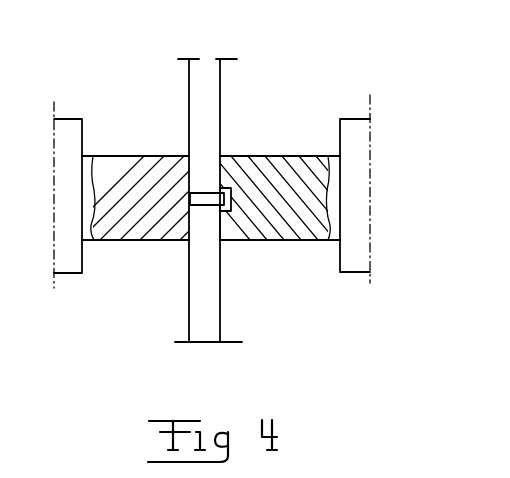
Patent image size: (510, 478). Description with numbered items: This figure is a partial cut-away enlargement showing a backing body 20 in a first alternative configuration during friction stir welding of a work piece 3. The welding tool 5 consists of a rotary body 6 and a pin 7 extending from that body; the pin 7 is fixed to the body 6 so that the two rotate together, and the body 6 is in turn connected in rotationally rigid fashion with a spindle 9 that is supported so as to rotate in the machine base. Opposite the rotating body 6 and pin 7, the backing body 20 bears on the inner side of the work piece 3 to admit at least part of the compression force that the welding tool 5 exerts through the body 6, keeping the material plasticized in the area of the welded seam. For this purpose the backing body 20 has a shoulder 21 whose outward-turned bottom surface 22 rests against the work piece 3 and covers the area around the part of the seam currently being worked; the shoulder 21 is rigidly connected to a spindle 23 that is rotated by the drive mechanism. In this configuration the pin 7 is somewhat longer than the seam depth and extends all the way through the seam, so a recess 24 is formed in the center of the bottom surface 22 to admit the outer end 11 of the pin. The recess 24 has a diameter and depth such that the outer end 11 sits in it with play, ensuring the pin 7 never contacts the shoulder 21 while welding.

The work piece 3 is at (188, 90).
The welding tool 5 is at (97, 88).
The rotary body 6 is at (141, 157).
The pin 7 is at (199, 207).
The spindle 9 is at (65, 262).
The outer end of the pin 11 is at (231, 190).
The backing body 20 is at (333, 118).
The shoulder 21 is at (296, 157).
The bottom surface 22 is at (217, 230).
The spindle 23 is at (360, 137).
The recess 24 is at (243, 157).